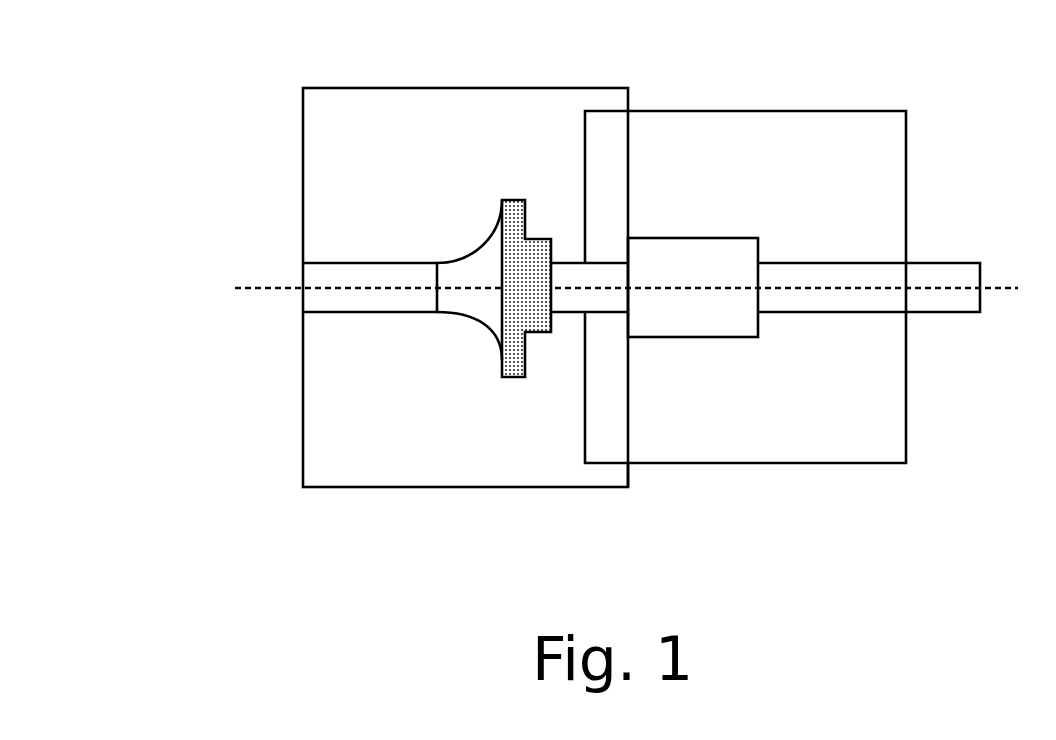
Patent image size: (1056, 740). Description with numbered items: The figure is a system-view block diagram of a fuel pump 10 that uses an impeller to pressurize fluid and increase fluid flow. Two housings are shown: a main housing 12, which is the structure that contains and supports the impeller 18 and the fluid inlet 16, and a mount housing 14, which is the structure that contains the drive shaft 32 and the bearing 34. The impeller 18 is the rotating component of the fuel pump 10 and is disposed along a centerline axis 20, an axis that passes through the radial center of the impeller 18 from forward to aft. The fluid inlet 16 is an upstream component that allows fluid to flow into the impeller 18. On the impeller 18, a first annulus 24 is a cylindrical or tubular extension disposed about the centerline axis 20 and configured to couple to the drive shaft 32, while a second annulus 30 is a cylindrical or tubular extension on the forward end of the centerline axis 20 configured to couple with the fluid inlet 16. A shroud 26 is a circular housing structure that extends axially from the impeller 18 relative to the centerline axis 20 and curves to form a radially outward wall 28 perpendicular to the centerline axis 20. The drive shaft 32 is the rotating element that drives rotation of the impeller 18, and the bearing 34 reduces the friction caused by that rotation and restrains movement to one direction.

The fuel pump 10 is at (296, 106).
The main housing 12 is at (431, 181).
The mount housing 14 is at (725, 195).
The fluid inlet 16 is at (347, 263).
The impeller 18 is at (522, 212).
The centerline axis 20 is at (1000, 286).
The first annulus 24 is at (542, 327).
The shroud 26 is at (487, 320).
The radially outward wall 28 is at (514, 377).
The second annulus 30 is at (447, 313).
The drive shaft 32 is at (947, 315).
The bearing 34 is at (748, 238).